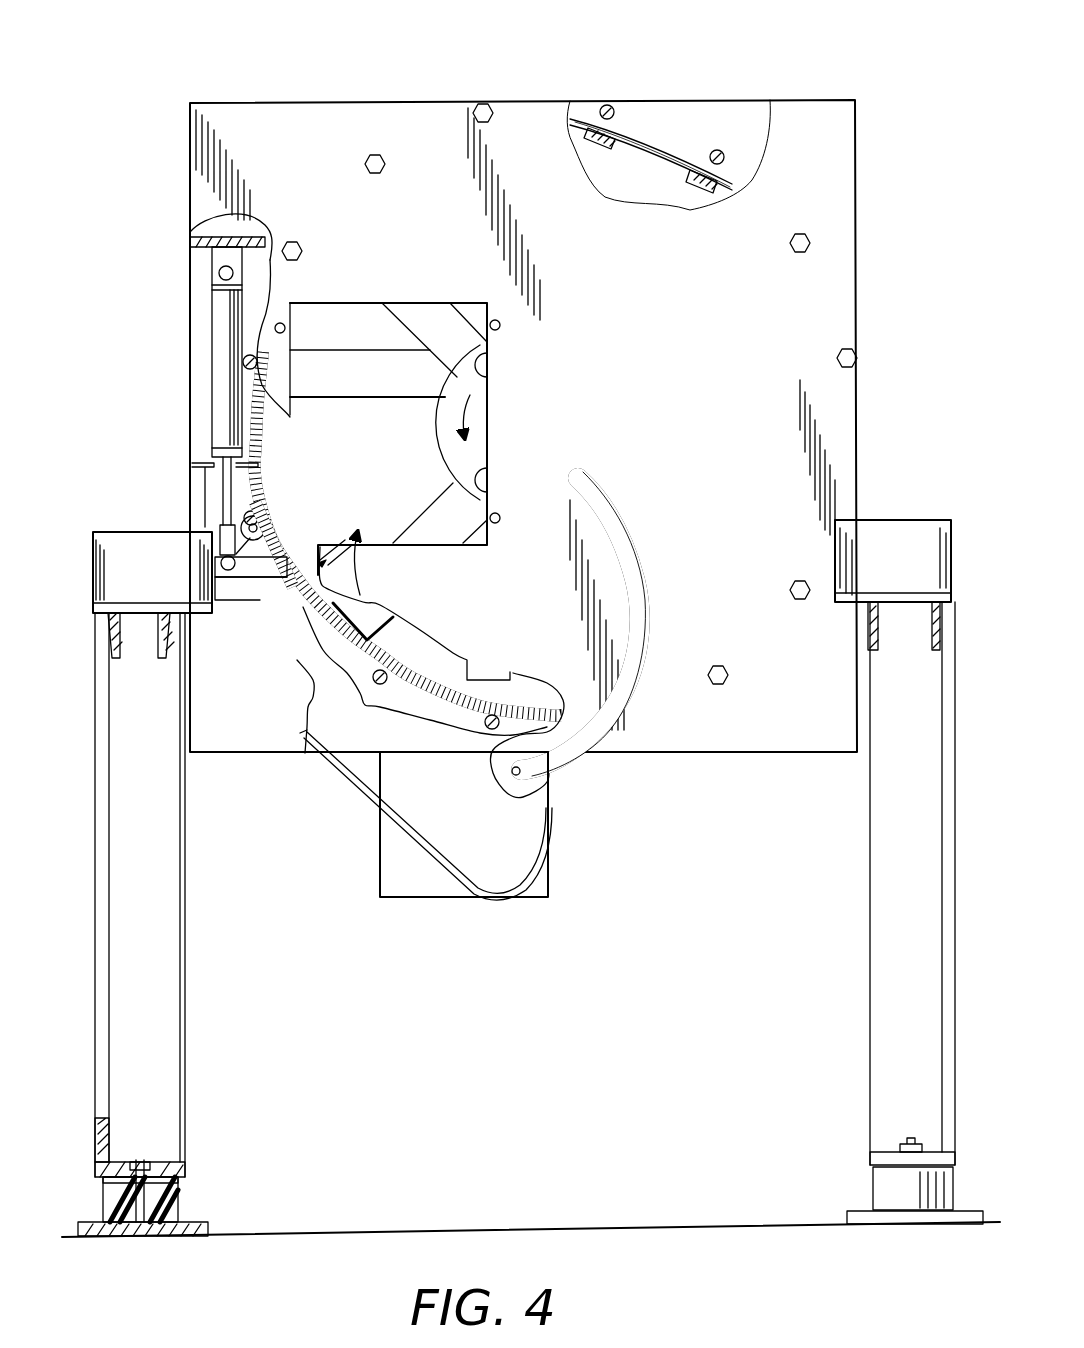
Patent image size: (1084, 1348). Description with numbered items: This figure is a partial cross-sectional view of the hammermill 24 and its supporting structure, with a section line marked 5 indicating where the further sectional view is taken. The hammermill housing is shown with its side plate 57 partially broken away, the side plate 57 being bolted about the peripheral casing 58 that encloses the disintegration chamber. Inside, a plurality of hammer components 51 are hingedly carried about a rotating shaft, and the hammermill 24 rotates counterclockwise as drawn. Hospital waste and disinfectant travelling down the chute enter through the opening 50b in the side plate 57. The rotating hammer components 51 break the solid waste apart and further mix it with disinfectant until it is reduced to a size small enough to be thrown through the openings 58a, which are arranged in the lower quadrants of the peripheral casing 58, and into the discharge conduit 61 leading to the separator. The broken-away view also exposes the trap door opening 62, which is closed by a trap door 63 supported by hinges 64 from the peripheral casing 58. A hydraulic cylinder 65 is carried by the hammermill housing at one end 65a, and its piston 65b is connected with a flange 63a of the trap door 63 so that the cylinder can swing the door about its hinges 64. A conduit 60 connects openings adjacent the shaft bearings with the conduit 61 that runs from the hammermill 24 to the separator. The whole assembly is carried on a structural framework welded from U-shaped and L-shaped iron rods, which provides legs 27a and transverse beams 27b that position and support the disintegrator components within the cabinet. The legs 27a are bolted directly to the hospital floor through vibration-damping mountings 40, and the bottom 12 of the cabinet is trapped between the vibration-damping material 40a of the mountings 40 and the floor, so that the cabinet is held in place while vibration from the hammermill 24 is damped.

The hammermill 24 is at (503, 72).
The side frame 57 is at (838, 135).
The peripheral casing 58 is at (678, 150).
The openings 58a is at (430, 672).
The hydraulic cylinder 65 is at (186, 369).
The end of hydraulic cylinder 65a is at (218, 273).
The piston 65b is at (225, 497).
The hinges 64 is at (248, 527).
The trap door 63 is at (285, 612).
The flange 63a is at (268, 583).
The trap door opening 62 is at (336, 547).
The opening 50b is at (365, 545).
The hammer components 51 is at (410, 310).
The conduit 60 is at (632, 600).
The discharge conduit 61 is at (345, 790).
The transverse beams 27b is at (165, 610).
The legs 27a is at (145, 1010).
The vibration-damping mountings 40 is at (528, 1190).
The vibration-damping material 40a is at (178, 1185).
The bottom of cabinet 12 is at (165, 1232).
The section line 5- 5 is at (105, 470).